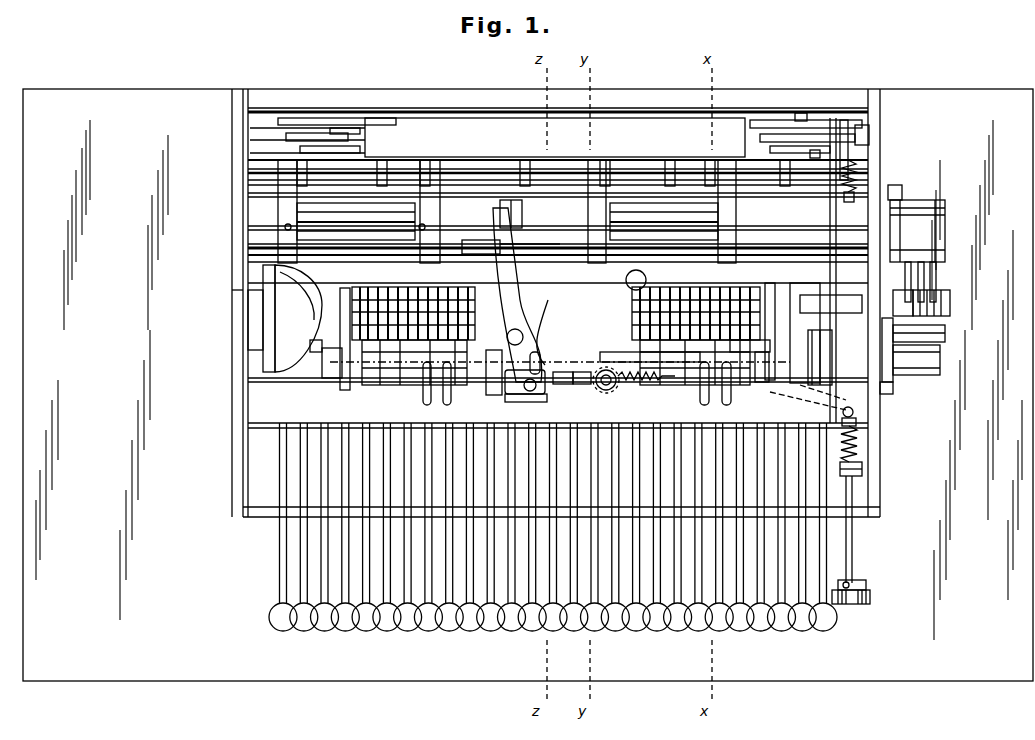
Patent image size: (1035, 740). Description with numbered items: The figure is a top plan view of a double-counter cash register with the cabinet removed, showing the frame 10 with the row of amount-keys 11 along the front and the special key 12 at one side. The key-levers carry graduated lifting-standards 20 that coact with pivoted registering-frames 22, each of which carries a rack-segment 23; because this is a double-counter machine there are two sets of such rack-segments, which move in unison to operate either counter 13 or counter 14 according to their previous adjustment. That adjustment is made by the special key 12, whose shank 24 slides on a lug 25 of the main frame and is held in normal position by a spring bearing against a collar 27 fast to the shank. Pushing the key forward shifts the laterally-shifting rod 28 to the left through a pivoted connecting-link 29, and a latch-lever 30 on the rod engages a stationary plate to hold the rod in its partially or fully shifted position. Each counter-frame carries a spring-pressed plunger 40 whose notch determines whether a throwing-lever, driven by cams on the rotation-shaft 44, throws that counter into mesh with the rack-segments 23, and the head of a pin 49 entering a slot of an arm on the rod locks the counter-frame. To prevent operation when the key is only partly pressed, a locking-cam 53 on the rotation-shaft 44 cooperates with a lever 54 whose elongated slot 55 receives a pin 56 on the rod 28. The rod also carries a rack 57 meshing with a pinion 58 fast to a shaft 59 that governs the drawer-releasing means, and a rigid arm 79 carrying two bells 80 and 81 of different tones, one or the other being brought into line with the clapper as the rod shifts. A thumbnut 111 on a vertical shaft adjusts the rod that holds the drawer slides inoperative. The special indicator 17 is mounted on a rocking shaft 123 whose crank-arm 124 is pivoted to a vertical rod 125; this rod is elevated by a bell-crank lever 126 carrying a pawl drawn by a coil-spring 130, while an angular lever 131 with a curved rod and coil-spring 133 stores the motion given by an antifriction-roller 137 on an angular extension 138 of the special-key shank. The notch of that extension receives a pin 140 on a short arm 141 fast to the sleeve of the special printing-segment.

The frame 10 is at (232, 290).
The amount-keys 11 is at (375, 656).
The special key 12 is at (852, 604).
The counter 13 is at (412, 280).
The counter 14 is at (690, 280).
The special indicator 17 is at (555, 139).
The graduated lifting-standard 20 is at (856, 422).
The registering-frame 22 is at (501, 214).
The rack-segment 23 is at (772, 288).
The shank 24 is at (852, 548).
The lug 25 is at (862, 478).
The collar 27 is at (857, 450).
The laterally-shifting rod 28 is at (735, 385).
The connecting-link 29 is at (762, 385).
The latch-lever 30 is at (668, 365).
The spring-pressed plunger 40 is at (470, 385).
The rotation-shaft 44 is at (540, 250).
The pin 49 is at (496, 395).
The locking-cam 53 is at (522, 215).
The lever 54 is at (540, 290).
The elongated slot 55 is at (551, 325).
The pin 56 is at (598, 388).
The rack 57 is at (625, 380).
The pinion 58 is at (584, 397).
The shaft 59 is at (564, 397).
The rigid arm 79 is at (284, 318).
The bell 80 is at (298, 318).
The bell 81 is at (278, 352).
The thumbnut 111 is at (525, 402).
The rocking shaft 123 is at (778, 140).
The crank-arm 124 is at (862, 130).
The vertical rod 125 is at (843, 125).
The bell-crank lever 126 is at (858, 180).
The coil-spring 130 is at (830, 385).
The angular lever 131 is at (820, 338).
The coil-spring 133 is at (940, 356).
The antifriction-roller 137 is at (893, 390).
The angular extension 138 is at (893, 340).
The pin 140 is at (950, 310).
The short arm 141 is at (913, 296).